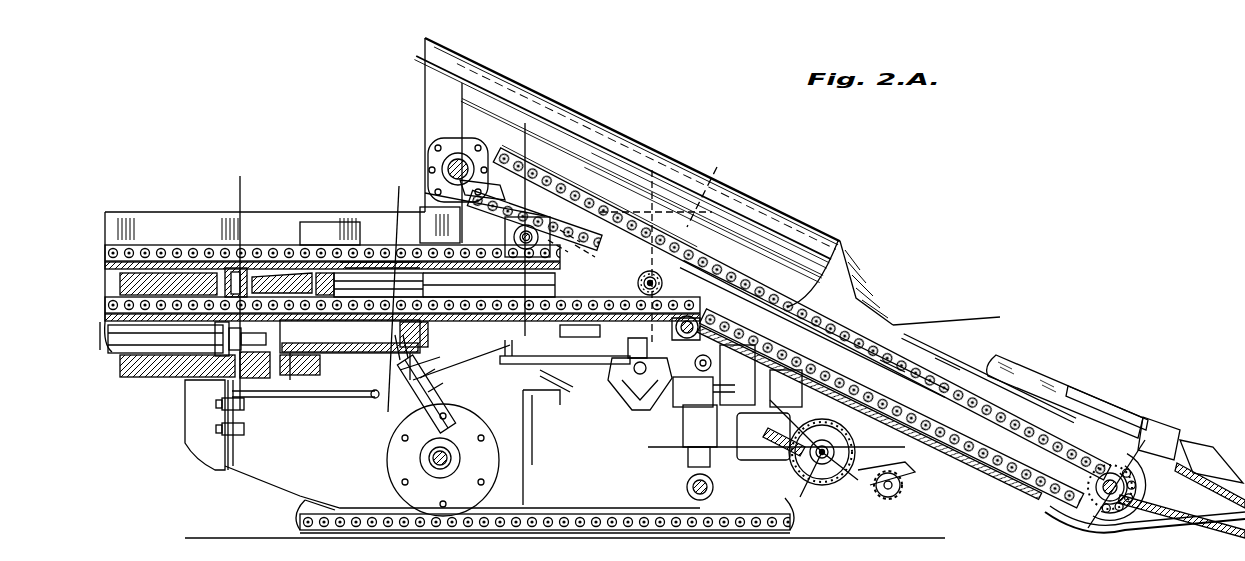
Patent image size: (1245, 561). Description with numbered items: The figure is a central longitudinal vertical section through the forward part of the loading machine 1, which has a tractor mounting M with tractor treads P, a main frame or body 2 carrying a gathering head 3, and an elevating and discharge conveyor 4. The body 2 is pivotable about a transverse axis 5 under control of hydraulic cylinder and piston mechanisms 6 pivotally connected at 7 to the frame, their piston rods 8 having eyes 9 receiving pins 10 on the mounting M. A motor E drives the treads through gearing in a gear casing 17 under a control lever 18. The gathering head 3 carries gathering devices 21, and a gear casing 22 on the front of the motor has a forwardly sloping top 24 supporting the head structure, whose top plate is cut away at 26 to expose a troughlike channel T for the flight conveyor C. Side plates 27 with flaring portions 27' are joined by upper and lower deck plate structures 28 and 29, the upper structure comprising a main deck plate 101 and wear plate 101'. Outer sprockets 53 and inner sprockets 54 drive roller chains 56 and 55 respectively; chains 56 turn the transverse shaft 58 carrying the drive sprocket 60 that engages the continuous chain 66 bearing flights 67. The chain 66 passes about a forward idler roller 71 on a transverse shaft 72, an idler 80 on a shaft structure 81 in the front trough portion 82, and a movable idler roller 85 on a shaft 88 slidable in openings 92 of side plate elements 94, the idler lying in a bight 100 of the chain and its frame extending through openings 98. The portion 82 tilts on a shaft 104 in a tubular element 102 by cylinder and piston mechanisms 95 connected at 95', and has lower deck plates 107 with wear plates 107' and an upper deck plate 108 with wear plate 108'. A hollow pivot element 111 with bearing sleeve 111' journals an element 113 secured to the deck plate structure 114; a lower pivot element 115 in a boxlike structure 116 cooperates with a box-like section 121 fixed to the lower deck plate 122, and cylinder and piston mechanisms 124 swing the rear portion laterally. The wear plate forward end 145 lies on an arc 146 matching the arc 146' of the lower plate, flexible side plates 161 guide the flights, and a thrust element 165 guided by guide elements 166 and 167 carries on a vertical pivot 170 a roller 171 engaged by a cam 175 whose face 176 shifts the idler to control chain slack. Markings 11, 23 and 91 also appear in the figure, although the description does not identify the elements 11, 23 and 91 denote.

The loading machine 1 is at (596, 114).
The main frame 2 is at (790, 483).
The gathering head 3 is at (1114, 416).
The elevating and discharge conveyor 4 is at (462, 83).
The transverse axis 5 is at (652, 190).
The hydraulic tilting and supporting cylinder and piston mechanisms 6 is at (395, 186).
The pivotal connection 7 is at (1133, 440).
The piston rods 8 is at (240, 176).
The eyes 9 is at (690, 497).
The pins 10 is at (648, 447).
The section line 11- 11 is at (523, 148).
The gear casing 17 is at (272, 466).
The control lever 18 is at (618, 368).
The gathering devices 21 is at (1200, 450).
The gear casing 22 is at (832, 484).
The tail end block 23 is at (1220, 472).
The forwardly sloping top 24 is at (790, 355).
The cut-away 26 is at (1145, 435).
The side plates 27 is at (1065, 396).
The oppositely outwardly inclined portions 27' is at (906, 364).
The upper deck plate structure 28 is at (943, 362).
The lower deck plate structure 29 is at (892, 362).
The outer sprockets 53 is at (800, 462).
The inner sprockets 54 is at (870, 470).
The roller chains 55 is at (908, 468).
The roller chains 56 is at (800, 448).
The transverse shaft 58 is at (428, 162).
The drive sprocket 60 is at (482, 185).
The continuous chain 66 is at (787, 318).
The flights 67 is at (708, 258).
The idler roller 71 is at (1085, 488).
The transverse shaft 72 is at (1133, 505).
The idler 80 is at (703, 328).
The transverse shaft structure 81 is at (688, 318).
The front trough portion 82 is at (719, 166).
The idler roller 85 is at (560, 197).
The transversely extending shaft 88 is at (538, 186).
The lower body chain 91 is at (578, 306).
The openings 92 is at (560, 178).
The side plate elements 94 is at (418, 215).
The extensible cylinder and piston mechanisms 95 is at (438, 394).
The pivotal connection 95' is at (428, 353).
The openings 98 is at (548, 245).
The loop or bight 100 is at (466, 194).
The main deck plate 101 is at (922, 313).
The wear plate 101' is at (840, 262).
The tubular element 102 is at (645, 275).
The shaft 104 is at (712, 264).
The lower deck plates 107 is at (565, 359).
The wear plates 107' is at (576, 415).
The upper deck plate 108 is at (311, 257).
The wear plate 108' is at (372, 243).
The hollow pivot element 111 is at (226, 241).
The bearing sleeve 111' is at (280, 258).
The pivotal support element 113 is at (183, 283).
The deck plate structure 114 is at (137, 247).
The pivot element 115 is at (210, 385).
The boxlike structure 116 is at (275, 398).
The box-like section 121 is at (108, 345).
The lower deck plate portion 122 is at (120, 400).
The cylinder and piston mechanisms 124 is at (195, 365).
The forward end 145 is at (133, 255).
The arc 146 is at (203, 254).
The arc 146' is at (177, 374).
The flexible side plates 161 is at (322, 222).
The hollow boxlike element 165 is at (367, 322).
The guide element 166 is at (337, 322).
The guide element 167 is at (433, 362).
The vertical pivot 170 is at (355, 262).
The cam engaging roller 171 is at (352, 252).
The cam 175 is at (285, 262).
The face 176 is at (312, 322).
The flight conveyor C is at (1110, 480).
The motor E is at (600, 525).
The tractor mounting M is at (345, 520).
The tractor treads P is at (425, 530).
The troughlike channel T is at (1073, 435).